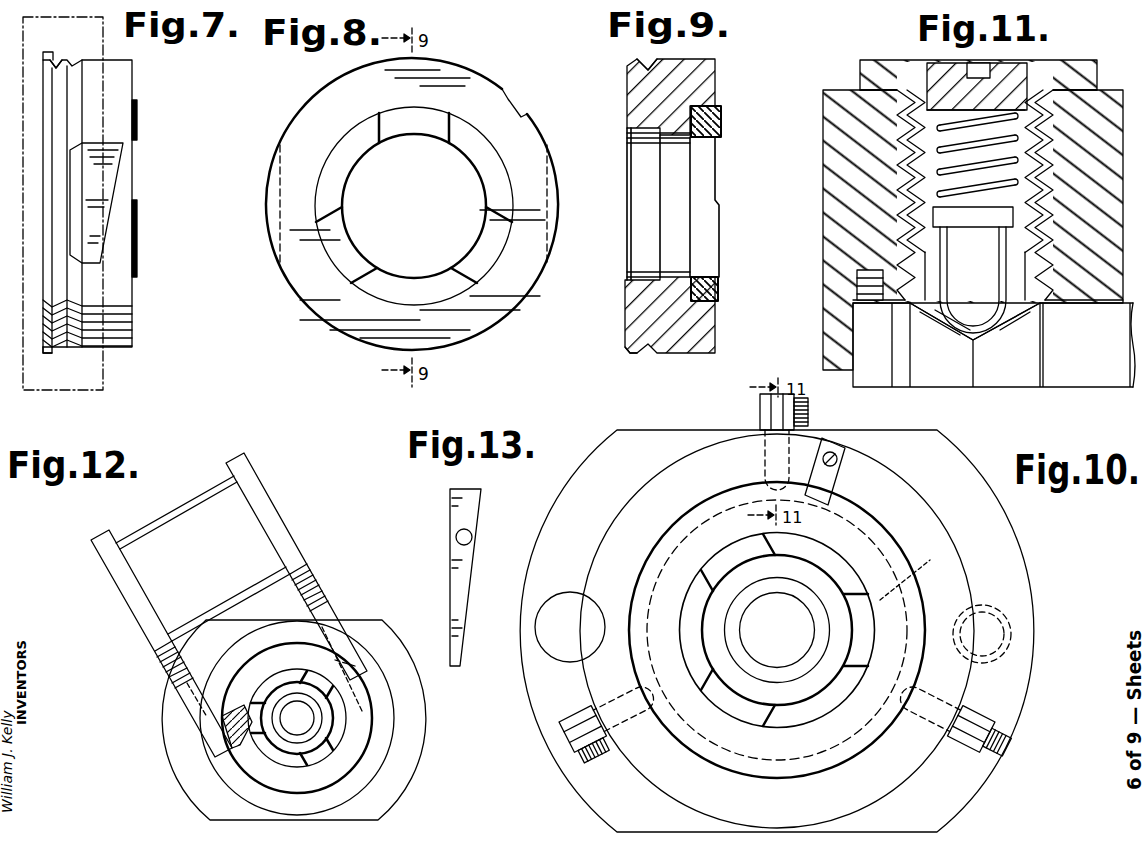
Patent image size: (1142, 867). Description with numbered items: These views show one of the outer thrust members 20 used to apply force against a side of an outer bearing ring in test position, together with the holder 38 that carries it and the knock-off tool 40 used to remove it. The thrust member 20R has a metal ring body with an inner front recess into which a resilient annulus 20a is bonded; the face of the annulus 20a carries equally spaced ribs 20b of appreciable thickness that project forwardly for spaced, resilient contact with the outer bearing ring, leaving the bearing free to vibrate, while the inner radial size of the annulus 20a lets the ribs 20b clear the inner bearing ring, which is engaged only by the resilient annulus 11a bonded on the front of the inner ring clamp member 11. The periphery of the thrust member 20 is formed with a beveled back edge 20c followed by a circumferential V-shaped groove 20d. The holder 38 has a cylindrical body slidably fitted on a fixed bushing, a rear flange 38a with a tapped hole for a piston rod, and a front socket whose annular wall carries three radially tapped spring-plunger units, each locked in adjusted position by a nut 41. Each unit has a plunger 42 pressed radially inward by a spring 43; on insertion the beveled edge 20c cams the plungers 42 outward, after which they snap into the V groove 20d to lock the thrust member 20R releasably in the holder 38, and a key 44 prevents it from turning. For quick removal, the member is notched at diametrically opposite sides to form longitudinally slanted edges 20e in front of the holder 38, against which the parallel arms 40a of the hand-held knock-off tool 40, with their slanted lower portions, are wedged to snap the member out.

In FIG. 10, the inner ring clamp member 11 is at (785, 653).
In FIG. 10, the annulus 11a is at (790, 590).
In FIG. 8, the outer thrust member 20 is at (308, 100).
In FIG. 9, the outer thrust member 20 is at (718, 72).
In FIG. 11, the outer thrust member 20 is at (1096, 364).
In FIG. 8, the annulus 20a is at (342, 144).
In FIG. 9, the annulus 20a is at (717, 175).
In FIG. 10, the annulus 20a is at (840, 560).
In FIG. 7, the ribs 20b is at (138, 117).
In FIG. 8, the ribs 20b is at (416, 114).
In FIG. 9, the ribs 20b is at (720, 131).
In FIG. 10, the ribs 20b is at (740, 553).
In FIG. 7, the beveled back edge 20c is at (43, 350).
In FIG. 9, the beveled back edge 20c is at (627, 347).
In FIG. 11, the beveled back edge 20c is at (853, 317).
In FIG. 7, the V-shaped groove 20d is at (60, 60).
In FIG. 9, the V-shaped groove 20d is at (653, 352).
In FIG. 11, the V-shaped groove 20d is at (930, 305).
In FIG. 7, the slanted edges 20e is at (115, 168).
In FIG. 8, the slanted edges 20e is at (556, 198).
In FIG. 10, the slanted edges 20e is at (912, 596).
In FIG. 7, the outer thrust member 20R is at (120, 322).
In FIG. 12, the outer thrust member 20R is at (272, 655).
In FIG. 10, the outer thrust member 20R is at (900, 546).
In FIG. 7, the holder 38 is at (103, 378).
In FIG. 11, the holder 38 is at (1113, 90).
In FIG. 12, the holder 38 is at (382, 742).
In FIG. 10, the holder 38 is at (705, 460).
In FIG. 12, the rear flange 38a is at (362, 620).
In FIG. 10, the rear flange 38a is at (580, 463).
In FIG. 12, the knock-off tool 40 is at (163, 513).
In FIG. 12, the parallel arms 40a is at (280, 520).
In FIG. 13, the parallel arms 40a is at (450, 578).
In FIG. 11, the nut 41 is at (1087, 62).
In FIG. 10, the nut 41 is at (810, 419).
In FIG. 11, the plunger 42 is at (983, 291).
In FIG. 10, the plunger 42 is at (743, 495).
In FIG. 11, the spring 43 is at (970, 203).
In FIG. 10, the key 44 is at (830, 483).